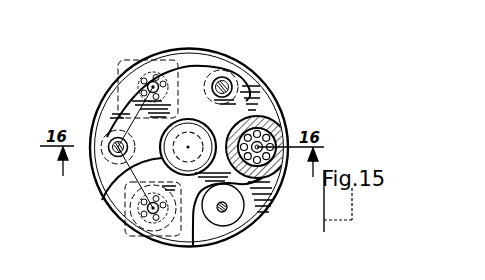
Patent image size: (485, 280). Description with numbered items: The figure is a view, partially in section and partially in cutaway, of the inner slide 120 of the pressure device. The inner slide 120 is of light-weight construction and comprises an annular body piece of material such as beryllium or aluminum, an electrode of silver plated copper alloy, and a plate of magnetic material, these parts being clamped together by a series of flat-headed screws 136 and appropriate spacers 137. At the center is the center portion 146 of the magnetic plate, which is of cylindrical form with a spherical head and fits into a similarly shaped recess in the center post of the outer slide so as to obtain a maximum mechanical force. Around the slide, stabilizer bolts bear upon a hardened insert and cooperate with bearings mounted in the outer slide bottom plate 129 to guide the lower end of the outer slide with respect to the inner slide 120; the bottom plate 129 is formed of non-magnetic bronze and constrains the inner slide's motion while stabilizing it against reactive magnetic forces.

The inner slide 120 is at (112, 85).
The outer slide bottom plate 129 is at (176, 46).
The flat-headed screws 136 is at (226, 73).
The spacers 137 is at (252, 221).
The center portion of the plate 146 is at (122, 164).